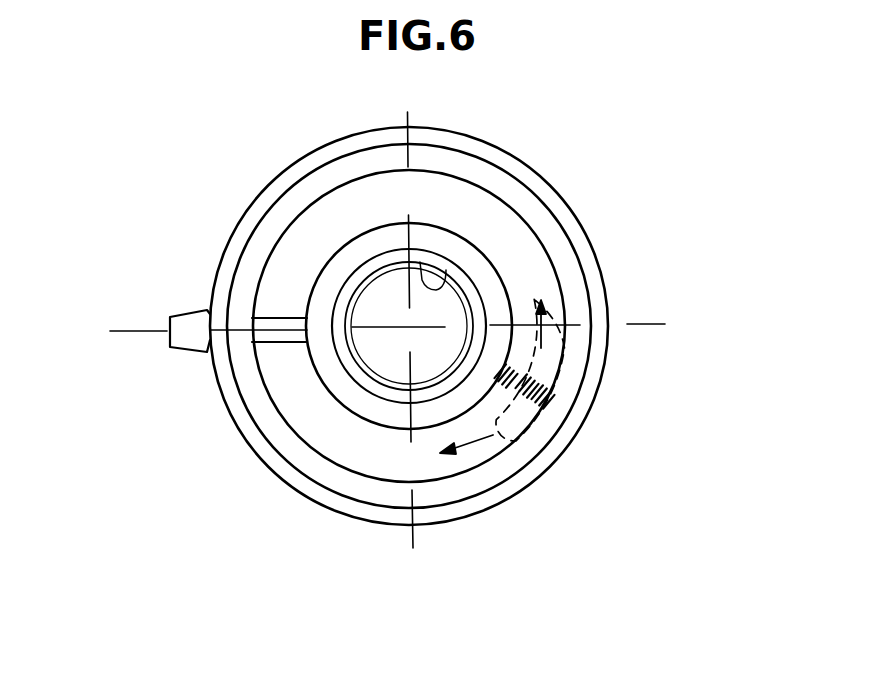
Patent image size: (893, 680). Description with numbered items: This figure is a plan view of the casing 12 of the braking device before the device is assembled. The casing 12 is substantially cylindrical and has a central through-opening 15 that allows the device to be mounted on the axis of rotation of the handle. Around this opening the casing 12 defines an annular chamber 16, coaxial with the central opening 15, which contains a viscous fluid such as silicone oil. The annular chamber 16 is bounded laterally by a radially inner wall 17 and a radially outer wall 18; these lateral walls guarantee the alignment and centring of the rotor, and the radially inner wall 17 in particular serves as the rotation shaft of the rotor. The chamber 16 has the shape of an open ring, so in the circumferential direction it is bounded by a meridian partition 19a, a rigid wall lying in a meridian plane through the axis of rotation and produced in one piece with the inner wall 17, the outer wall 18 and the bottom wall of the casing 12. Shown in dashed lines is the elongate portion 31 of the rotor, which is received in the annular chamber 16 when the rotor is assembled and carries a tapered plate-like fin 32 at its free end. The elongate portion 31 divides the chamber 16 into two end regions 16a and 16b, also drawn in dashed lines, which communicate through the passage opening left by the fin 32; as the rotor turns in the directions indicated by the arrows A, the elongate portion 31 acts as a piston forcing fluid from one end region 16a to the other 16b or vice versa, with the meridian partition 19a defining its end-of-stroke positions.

The casing 12 is at (280, 164).
The central through-opening 15 is at (418, 263).
The annular chamber 16 is at (522, 238).
The end region 16a is at (542, 292).
The end region 16b is at (350, 443).
The radially inner wall 17 is at (356, 258).
The radially outer wall 18 is at (485, 177).
The meridian partition 19a is at (280, 322).
The elongate portion 31 is at (553, 360).
The fin 32 is at (545, 378).
The arrows indicating directions of rotation A is at (550, 339).